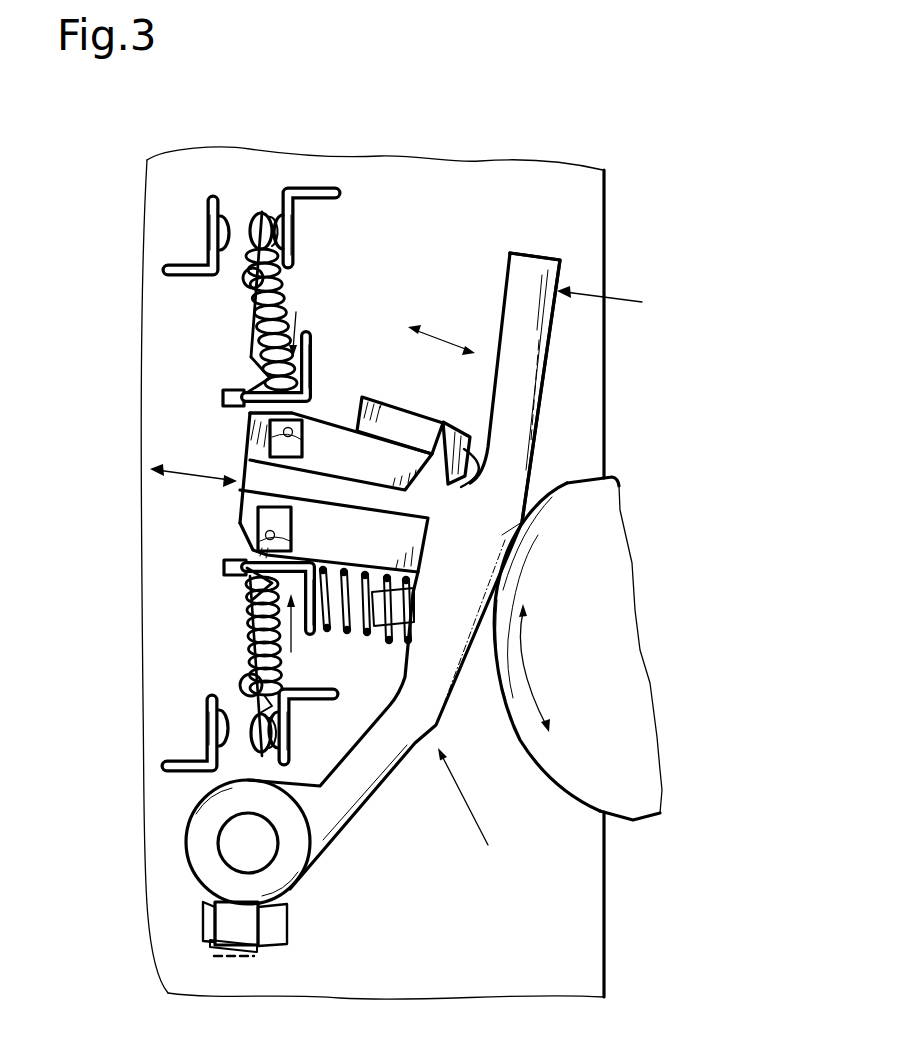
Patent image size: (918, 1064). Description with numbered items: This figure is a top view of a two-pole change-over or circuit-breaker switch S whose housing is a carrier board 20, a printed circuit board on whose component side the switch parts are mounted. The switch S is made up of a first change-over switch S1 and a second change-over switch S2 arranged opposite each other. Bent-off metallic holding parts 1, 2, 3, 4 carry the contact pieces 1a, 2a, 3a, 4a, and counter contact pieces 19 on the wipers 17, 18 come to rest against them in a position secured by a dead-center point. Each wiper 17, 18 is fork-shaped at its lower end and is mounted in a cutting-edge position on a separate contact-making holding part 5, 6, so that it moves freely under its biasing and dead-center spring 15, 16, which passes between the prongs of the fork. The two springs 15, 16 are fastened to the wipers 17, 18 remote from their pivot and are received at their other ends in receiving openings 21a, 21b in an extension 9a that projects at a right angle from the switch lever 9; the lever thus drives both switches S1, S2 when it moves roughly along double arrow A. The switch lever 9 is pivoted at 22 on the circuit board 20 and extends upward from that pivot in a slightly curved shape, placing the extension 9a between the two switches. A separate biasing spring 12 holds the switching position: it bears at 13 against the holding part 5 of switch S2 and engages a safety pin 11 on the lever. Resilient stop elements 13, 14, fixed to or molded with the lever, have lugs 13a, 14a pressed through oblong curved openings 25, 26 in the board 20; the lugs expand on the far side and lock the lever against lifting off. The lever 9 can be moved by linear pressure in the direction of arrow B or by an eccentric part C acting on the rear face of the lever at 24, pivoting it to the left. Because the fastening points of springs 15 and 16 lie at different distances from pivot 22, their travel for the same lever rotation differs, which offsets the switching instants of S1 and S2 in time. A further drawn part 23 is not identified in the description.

The holding part 1 is at (210, 200).
The contact piece 1a is at (227, 220).
The holding part 2 is at (297, 193).
The contact piece 2a is at (274, 220).
The counter contact piece 19 is at (258, 218).
The biasing and dead-center spring 15 is at (243, 285).
The wiper 18 is at (257, 378).
The holding part 6 is at (224, 398).
The receiving opening 21b is at (252, 455).
The double arrow A is at (184, 470).
The receiving opening 21a is at (237, 523).
The holding part 5 is at (224, 568).
The wiper 17 is at (248, 578).
The biasing and dead-center spring 16 is at (240, 678).
The holding part 3 is at (166, 768).
The contact piece 3a is at (220, 732).
The holding part 4 is at (290, 748).
The contact piece 4a is at (280, 733).
The pivot point 22 is at (236, 851).
The resilient stop element 13 is at (222, 935).
The lug 13a is at (233, 956).
The oblong curved opening 26 is at (272, 940).
The carrier board 20 is at (478, 985).
The first change-over switch S1 is at (301, 325).
The second change-over switch S2 is at (292, 639).
The extension 9a is at (340, 430).
The oblong curved opening 25 is at (381, 410).
The resilient stop element 14 is at (432, 453).
The lug 14a is at (460, 424).
The spring rod 23 is at (318, 636).
The biasing spring 12 is at (350, 638).
The safety pin 11 is at (382, 640).
The arrow B is at (617, 297).
The switch lever 9 is at (527, 373).
The rear face location 24 is at (519, 527).
The eccentric part C is at (608, 530).
The double-pole reversing switch S is at (373, 578).